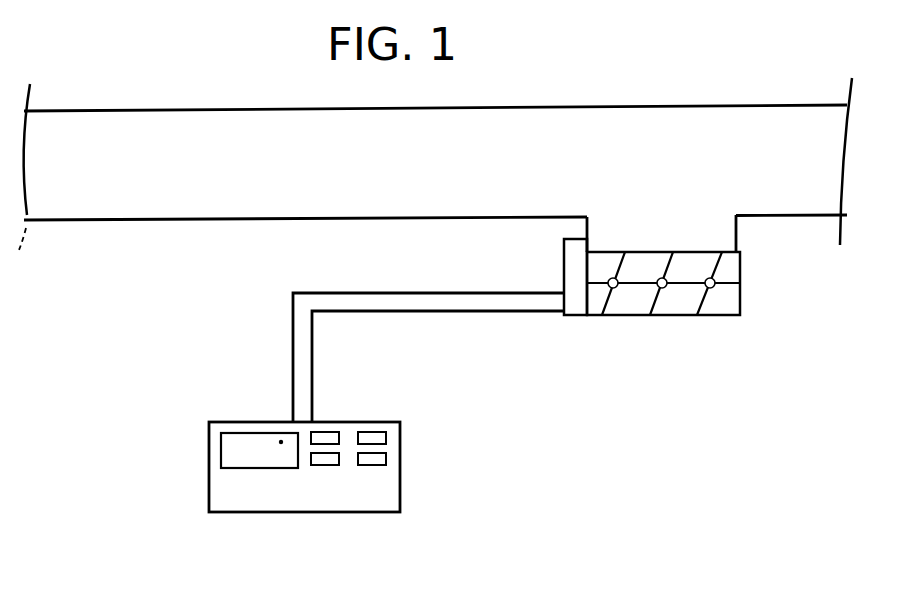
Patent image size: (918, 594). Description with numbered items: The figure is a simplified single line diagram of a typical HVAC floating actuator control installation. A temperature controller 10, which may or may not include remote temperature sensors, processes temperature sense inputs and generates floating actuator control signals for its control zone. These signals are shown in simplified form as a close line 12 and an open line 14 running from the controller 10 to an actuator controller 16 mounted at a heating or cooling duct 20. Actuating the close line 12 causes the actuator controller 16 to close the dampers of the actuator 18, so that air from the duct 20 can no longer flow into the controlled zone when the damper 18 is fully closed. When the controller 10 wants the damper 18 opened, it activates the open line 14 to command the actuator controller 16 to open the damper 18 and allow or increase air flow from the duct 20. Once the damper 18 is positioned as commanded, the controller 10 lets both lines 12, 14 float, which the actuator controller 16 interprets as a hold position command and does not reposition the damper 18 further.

The temperature controller 10 is at (304, 513).
The close line 12 is at (293, 355).
The open line 14 is at (316, 355).
The actuator controller 16 is at (577, 308).
The actuator 18 is at (722, 316).
The duct 20 is at (517, 108).